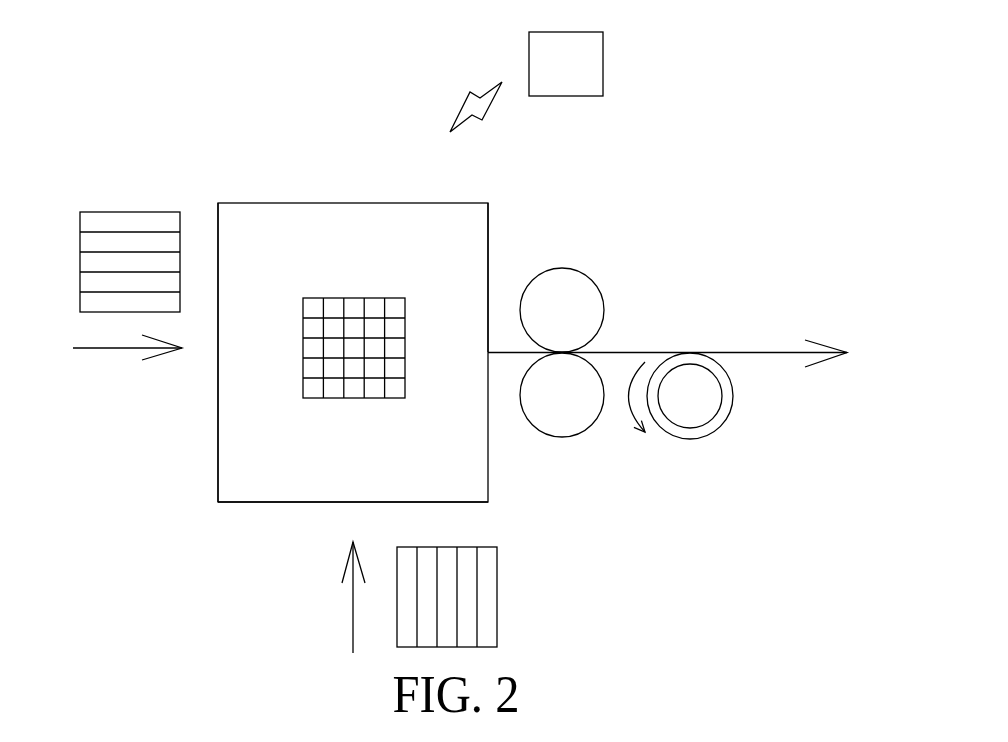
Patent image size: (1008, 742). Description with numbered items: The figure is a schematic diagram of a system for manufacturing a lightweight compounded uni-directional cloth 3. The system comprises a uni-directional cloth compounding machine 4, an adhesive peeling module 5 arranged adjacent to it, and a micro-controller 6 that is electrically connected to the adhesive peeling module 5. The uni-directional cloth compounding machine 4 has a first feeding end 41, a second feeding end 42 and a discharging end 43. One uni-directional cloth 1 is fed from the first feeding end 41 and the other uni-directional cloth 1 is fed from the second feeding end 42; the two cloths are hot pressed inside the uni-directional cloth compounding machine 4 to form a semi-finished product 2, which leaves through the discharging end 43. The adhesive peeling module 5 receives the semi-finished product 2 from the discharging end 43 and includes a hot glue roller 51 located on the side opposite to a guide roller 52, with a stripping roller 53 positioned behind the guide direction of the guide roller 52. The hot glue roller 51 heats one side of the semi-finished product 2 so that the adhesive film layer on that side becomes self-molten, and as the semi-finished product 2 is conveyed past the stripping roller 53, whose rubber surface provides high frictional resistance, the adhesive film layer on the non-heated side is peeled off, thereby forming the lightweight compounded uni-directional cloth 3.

The uni-directional cloth 1 is at (107, 182).
The semi-finished product 2 is at (342, 282).
The lightweight compounded uni-directional cloth 3 is at (775, 337).
The uni-directional cloth compounding machine 4 is at (208, 548).
The first feeding end 41 is at (218, 470).
The second feeding end 42 is at (275, 503).
The discharging end 43 is at (490, 222).
The adhesive peeling module 5 is at (638, 328).
The hot glue roller 51 is at (587, 273).
The guide roller 52 is at (583, 432).
The stripping roller 53 is at (715, 432).
The micro-controller 6 is at (603, 65).